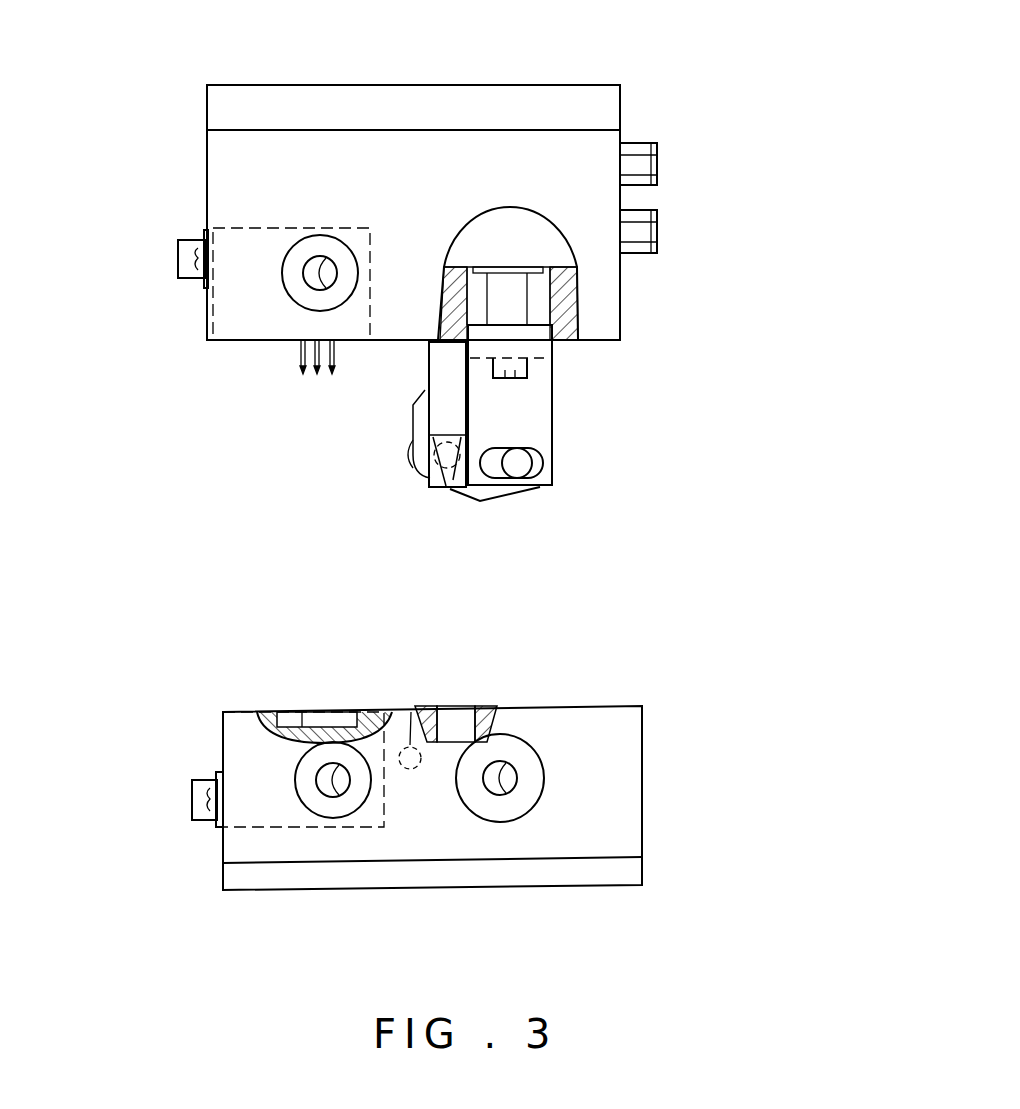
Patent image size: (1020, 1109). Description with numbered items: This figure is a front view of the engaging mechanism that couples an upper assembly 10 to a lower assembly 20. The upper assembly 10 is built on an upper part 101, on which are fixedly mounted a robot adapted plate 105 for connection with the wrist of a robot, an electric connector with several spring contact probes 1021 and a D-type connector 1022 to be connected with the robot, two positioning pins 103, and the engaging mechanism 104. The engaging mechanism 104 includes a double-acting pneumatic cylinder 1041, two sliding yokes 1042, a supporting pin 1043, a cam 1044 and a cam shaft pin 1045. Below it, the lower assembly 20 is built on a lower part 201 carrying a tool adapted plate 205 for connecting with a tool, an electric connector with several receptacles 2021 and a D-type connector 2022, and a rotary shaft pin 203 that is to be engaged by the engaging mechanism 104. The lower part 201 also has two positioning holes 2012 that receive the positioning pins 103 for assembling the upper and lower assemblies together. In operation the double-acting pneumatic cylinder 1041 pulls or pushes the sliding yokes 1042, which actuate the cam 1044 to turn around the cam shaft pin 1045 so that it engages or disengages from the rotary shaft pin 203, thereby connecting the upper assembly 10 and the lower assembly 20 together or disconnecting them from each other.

The upper assembly 10 is at (620, 205).
The upper part 101 is at (580, 147).
The positioning pins 103 is at (440, 378).
The engaging mechanism 104 is at (553, 420).
The robot adapted plate 105 is at (438, 84).
The spring contact probes 1021 is at (303, 374).
The D-type connector 1022 is at (178, 262).
The double-acting pneumatic cylinder 1041 is at (545, 255).
The sliding yokes 1042 is at (530, 386).
The supporting pin 1043 is at (520, 487).
The cam 1044 is at (413, 452).
The cam shaft pin 1045 is at (443, 490).
The lower assembly 20 is at (643, 810).
The lower part 201 is at (597, 745).
The rotary shaft pin 203 is at (413, 712).
The tool adapted plate 205 is at (546, 868).
The positioning holes 2012 is at (455, 718).
The receptacles 2021 is at (327, 712).
The D-type connector 2022 is at (192, 808).